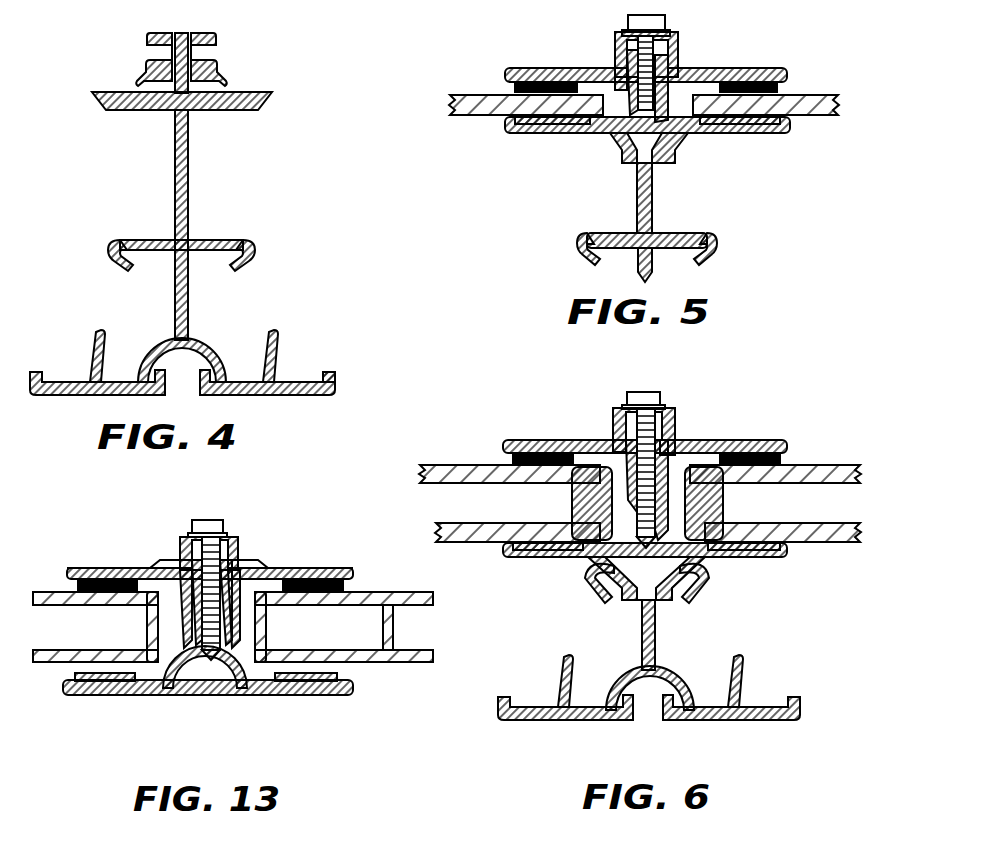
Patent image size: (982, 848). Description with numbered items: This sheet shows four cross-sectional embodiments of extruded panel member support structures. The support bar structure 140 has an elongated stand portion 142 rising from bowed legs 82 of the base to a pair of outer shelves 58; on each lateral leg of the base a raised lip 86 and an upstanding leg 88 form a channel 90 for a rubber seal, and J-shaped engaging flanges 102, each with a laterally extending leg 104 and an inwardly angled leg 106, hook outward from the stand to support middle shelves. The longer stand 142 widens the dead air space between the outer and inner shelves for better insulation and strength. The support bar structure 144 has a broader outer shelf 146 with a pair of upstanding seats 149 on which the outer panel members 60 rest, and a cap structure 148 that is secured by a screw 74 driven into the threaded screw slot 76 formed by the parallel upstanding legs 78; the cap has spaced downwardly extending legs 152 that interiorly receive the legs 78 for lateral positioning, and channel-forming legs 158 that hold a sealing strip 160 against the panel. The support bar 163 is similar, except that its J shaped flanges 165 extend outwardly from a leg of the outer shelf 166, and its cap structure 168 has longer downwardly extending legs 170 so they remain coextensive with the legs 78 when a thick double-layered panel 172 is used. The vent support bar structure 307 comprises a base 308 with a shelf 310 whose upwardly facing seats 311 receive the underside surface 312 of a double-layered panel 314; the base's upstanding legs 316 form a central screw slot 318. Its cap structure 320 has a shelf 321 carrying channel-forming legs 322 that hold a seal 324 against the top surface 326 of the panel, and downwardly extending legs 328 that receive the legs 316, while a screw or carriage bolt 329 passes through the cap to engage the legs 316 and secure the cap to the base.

In FIG. 4, the outer shelves 58 is at (231, 87).
In FIG. 4, the support bar structure 140 is at (284, 163).
In FIG. 4, the stand portion 142 is at (171, 160).
In FIG. 4, the J-shaped engaging flanges 102 is at (229, 238).
In FIG. 4, the laterally extending leg 104 is at (152, 238).
In FIG. 4, the inwardly angled leg 106 is at (234, 262).
In FIG. 4, the bowed legs 82 is at (152, 352).
In FIG. 4, the upstanding leg 88 is at (268, 339).
In FIG. 4, the raised lip 86 is at (334, 371).
In FIG. 4, the channel 90 is at (240, 395).
In FIG. 5, the screw 74 is at (664, 24).
In FIG. 5, the upstanding legs 78 is at (669, 66).
In FIG. 6, the upstanding legs 78 is at (597, 566).
In FIG. 5, the cap structure 148 is at (508, 63).
In FIG. 5, the channel-forming legs 158 is at (706, 79).
In FIG. 5, the sealing strip 160 is at (746, 80).
In FIG. 5, the outer panel members 60 is at (812, 113).
In FIG. 5, the outer shelf 146 is at (578, 146).
In FIG. 5, the threaded screw slot 76 is at (640, 112).
In FIG. 5, the downwardly extending legs 152 is at (666, 150).
In FIG. 5, the upstanding seats 149 is at (722, 126).
In FIG. 5, the support bar structure 144 is at (722, 209).
In FIG. 6, the cap structure 168 is at (694, 415).
In FIG. 6, the downwardly extending legs 170 is at (614, 455).
In FIG. 6, the panel 172 is at (812, 462).
In FIG. 6, the outer shelf 166 is at (790, 551).
In FIG. 6, the J shaped flanges 165 is at (716, 586).
In FIG. 6, the support bar 163 is at (763, 626).
In FIG. 13, the cap structure 320 is at (175, 545).
In FIG. 13, the shelf 321 is at (72, 564).
In FIG. 13, the screw or carriage bolt 329 is at (209, 521).
In FIG. 13, the support bar structure 307 is at (258, 546).
In FIG. 13, the downwardly extending legs 328 is at (241, 585).
In FIG. 13, the channel-forming legs 322 is at (286, 580).
In FIG. 13, the seal 324 is at (331, 578).
In FIG. 13, the upstanding legs 316 is at (225, 623).
In FIG. 13, the screw slot 318 is at (216, 644).
In FIG. 13, the top surface 326 is at (401, 601).
In FIG. 13, the double-layered panel 314 is at (413, 646).
In FIG. 13, the underside surface 312 is at (401, 676).
In FIG. 13, the shelf 310 is at (103, 699).
In FIG. 13, the base 308 is at (157, 711).
In FIG. 13, the upwardly facing seats 311 is at (286, 691).